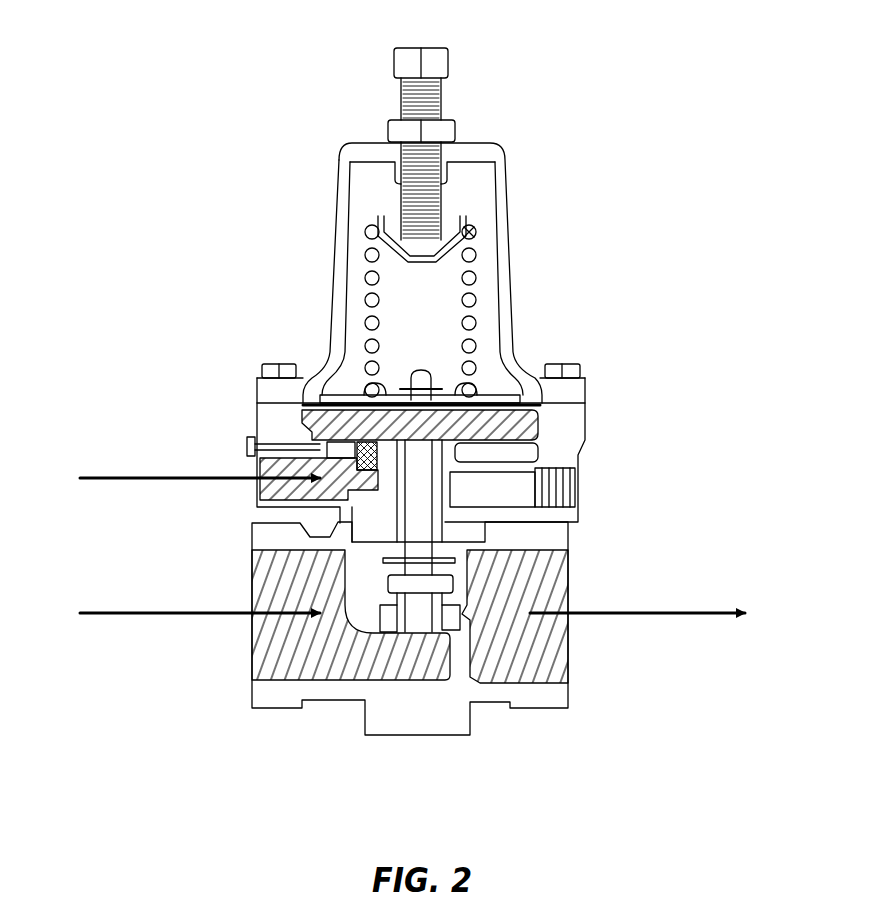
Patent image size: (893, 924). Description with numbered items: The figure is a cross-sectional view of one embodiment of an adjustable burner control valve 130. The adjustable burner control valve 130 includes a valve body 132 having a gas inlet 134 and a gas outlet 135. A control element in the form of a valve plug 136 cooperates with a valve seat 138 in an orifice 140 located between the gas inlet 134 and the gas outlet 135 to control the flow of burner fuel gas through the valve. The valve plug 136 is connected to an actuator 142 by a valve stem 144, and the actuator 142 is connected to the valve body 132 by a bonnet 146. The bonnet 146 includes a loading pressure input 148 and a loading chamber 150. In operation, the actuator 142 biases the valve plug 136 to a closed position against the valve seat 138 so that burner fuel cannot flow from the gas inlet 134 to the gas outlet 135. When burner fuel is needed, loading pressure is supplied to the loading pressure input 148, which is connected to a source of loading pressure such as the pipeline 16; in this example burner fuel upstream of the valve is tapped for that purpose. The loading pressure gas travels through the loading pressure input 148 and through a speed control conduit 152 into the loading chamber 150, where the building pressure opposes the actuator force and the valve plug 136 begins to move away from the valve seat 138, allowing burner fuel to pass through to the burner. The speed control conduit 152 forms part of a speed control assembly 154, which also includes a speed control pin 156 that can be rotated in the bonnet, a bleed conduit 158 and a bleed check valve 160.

The adjustable burner control valve 130 is at (230, 186).
The actuator 142 is at (500, 178).
The loading chamber 150 is at (527, 400).
The bonnet 146 is at (585, 450).
The bleed conduit 158 is at (378, 438).
The bleed check valve 160 is at (358, 430).
The speed control conduit 152 is at (318, 408).
The speed control pin 156 is at (282, 443).
The speed control assembly 154 is at (244, 445).
The loading pressure input 148 is at (258, 493).
The valve stem 144 is at (428, 520).
The valve body 132 is at (302, 710).
The gas inlet 134 is at (255, 657).
The gas outlet 135 is at (545, 672).
The valve plug 136 is at (455, 581).
The valve seat 138 is at (457, 619).
The orifice 140 is at (420, 625).
The pipeline 16 is at (160, 688).